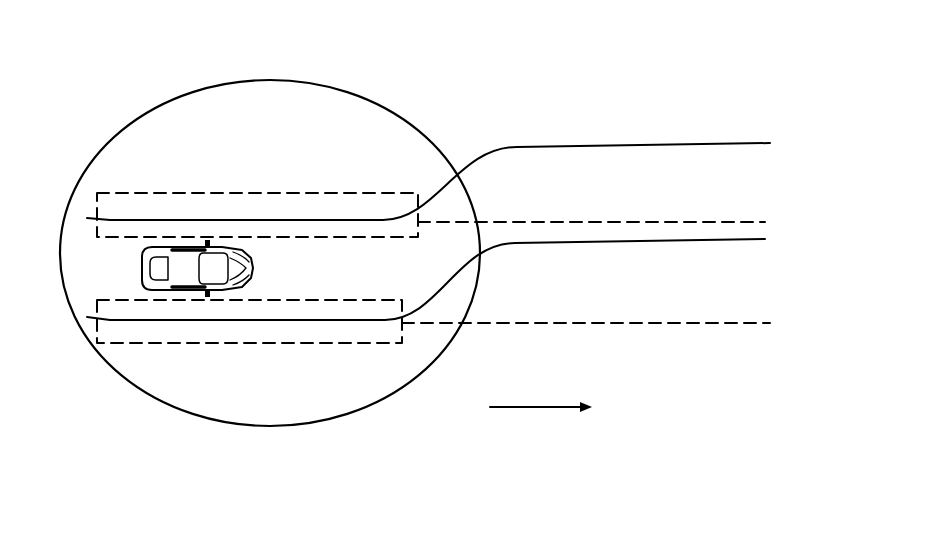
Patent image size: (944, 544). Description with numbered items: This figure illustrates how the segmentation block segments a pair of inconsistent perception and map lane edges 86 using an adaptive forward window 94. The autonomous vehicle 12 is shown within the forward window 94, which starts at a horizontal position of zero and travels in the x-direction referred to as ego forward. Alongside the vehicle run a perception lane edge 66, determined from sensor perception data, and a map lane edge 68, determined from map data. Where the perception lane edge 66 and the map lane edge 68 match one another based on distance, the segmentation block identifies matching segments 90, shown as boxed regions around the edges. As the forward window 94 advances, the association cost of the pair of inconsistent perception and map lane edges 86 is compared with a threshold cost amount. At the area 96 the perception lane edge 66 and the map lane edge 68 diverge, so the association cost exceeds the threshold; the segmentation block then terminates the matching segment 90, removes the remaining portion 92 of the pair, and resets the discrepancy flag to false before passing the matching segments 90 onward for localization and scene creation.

The autonomous vehicle 12 is at (250, 258).
The perception lane edge 66 is at (715, 140).
The map lane edge 68 is at (712, 222).
The pair of inconsistent perception and map lane edges 86 is at (766, 42).
The matching segment 90 is at (237, 192).
The remaining portion 92 is at (568, 115).
The adaptive forward window 94 is at (348, 90).
The area 96 is at (445, 136).